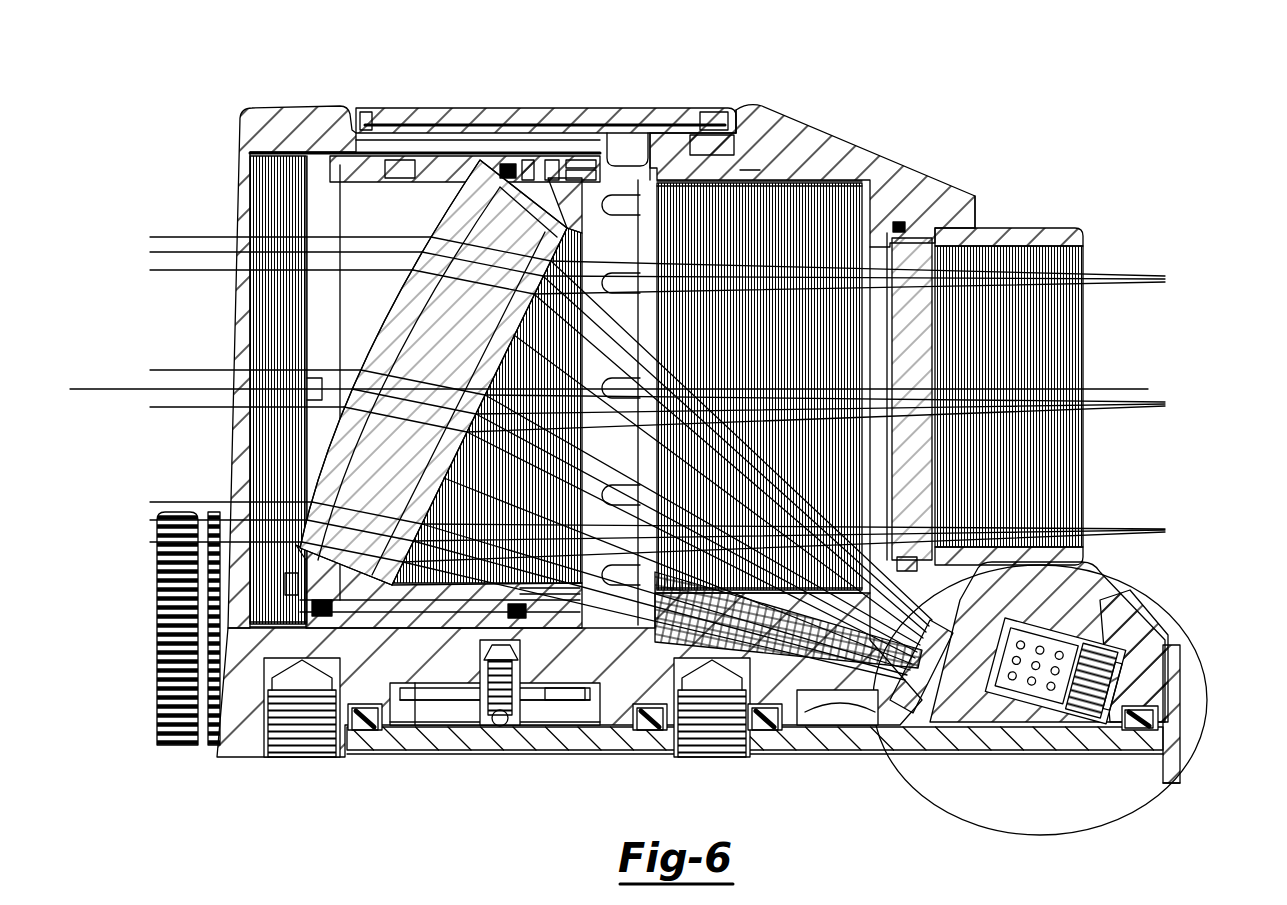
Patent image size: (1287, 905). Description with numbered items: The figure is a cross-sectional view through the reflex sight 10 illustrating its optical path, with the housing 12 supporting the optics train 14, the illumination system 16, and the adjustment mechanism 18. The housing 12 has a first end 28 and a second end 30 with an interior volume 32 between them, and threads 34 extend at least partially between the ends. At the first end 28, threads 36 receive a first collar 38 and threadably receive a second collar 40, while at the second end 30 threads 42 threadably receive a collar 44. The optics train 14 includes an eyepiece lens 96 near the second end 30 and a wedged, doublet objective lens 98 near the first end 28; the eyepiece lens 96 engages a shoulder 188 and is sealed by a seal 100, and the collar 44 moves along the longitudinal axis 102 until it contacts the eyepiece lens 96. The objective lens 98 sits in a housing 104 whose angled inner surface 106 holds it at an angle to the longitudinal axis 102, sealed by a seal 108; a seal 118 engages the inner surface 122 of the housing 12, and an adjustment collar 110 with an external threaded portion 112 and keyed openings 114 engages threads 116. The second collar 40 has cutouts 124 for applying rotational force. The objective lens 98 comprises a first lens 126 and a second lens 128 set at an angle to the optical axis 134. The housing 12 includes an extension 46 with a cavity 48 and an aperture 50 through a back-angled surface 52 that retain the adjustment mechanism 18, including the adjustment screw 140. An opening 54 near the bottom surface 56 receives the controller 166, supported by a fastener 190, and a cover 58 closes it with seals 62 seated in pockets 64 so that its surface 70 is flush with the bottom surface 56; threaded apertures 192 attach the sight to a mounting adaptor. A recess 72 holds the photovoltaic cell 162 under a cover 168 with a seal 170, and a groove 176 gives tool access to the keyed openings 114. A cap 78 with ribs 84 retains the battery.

The reflex sight 10 is at (1030, 835).
The housing 12 is at (774, 110).
The optics train 14 is at (452, 224).
The illumination system 16 is at (940, 633).
The adjustment mechanism 18 is at (1055, 644).
The first end 28 is at (243, 135).
The second end 30 is at (980, 215).
The interior volume 32 is at (652, 160).
The threads 34 is at (800, 180).
The threads 36 is at (318, 160).
The first collar 38 is at (398, 160).
The second collar 40 is at (278, 176).
The threads 42 is at (1040, 242).
The collar 44 is at (960, 228).
The extension 46 is at (1178, 692).
The cavity 48 is at (985, 722).
The aperture 50 is at (1150, 620).
The back-angled surface 52 is at (1180, 645).
The opening 54 is at (830, 740).
The bottom surface 56 is at (222, 760).
The cover 58 is at (470, 757).
The seals 62 is at (362, 732).
The pockets 64 is at (365, 704).
The surface 70 is at (1022, 790).
The recess 72 is at (736, 112).
The cap 78 is at (210, 642).
The ribs 84 is at (158, 566).
The eyepiece lens 96 is at (970, 315).
The wedged, doublet objective lens 98 is at (378, 326).
The seal 100 is at (912, 238).
The longitudinal axis 102 is at (1125, 388).
The housing 104 is at (552, 162).
The inner surface 106 is at (502, 183).
The seal 108 is at (506, 165).
The adjustment collar 110 is at (590, 170).
The external threaded portion 112 is at (580, 160).
The keyed openings 114 is at (700, 218).
The threads 116 is at (625, 618).
The seal 118 is at (528, 160).
The inner surface 122 is at (378, 162).
The cutouts 124 is at (318, 372).
The first lens 126 is at (340, 478).
The second lens 128 is at (590, 250).
The optical axis 134 is at (1120, 404).
The adjustment screw 140 is at (1068, 722).
The photovoltaic cell 162 is at (458, 122).
The controller 166 is at (855, 700).
The cover 168 is at (700, 140).
The seal 170 is at (365, 128).
The groove 176 is at (625, 150).
The shoulder 188 is at (897, 228).
The fastener 190 is at (505, 727).
The threaded apertures 192 is at (300, 760).